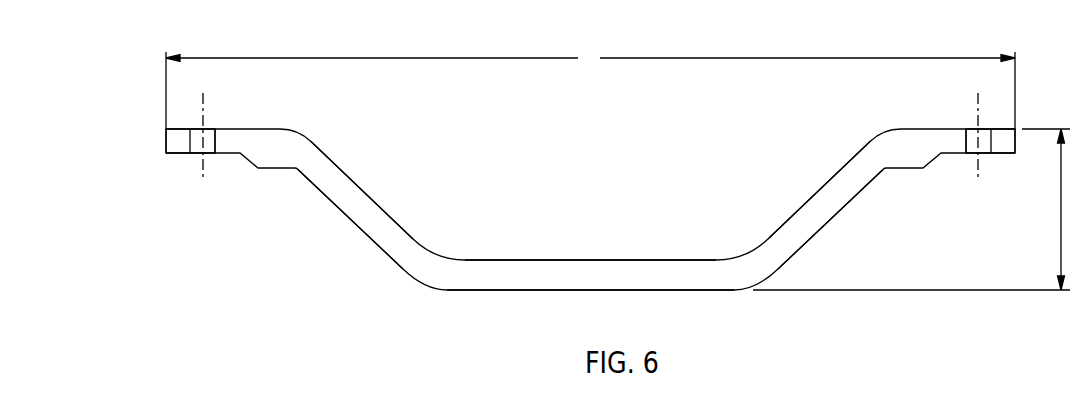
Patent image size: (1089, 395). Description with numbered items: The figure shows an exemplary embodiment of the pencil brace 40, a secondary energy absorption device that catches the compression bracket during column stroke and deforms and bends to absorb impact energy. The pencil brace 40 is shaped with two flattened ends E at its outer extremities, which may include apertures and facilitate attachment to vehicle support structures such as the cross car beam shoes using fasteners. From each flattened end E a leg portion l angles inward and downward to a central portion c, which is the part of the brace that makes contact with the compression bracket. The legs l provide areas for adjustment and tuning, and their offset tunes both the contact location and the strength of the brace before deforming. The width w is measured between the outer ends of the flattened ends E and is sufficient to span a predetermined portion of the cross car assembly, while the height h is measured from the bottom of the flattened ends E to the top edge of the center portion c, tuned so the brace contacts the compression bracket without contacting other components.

The pencil brace 40 is at (397, 318).
The flattened ends E is at (181, 153).
The leg portion l is at (352, 213).
The center portion c is at (587, 282).
The width w is at (590, 89).
The height h is at (911, 209).